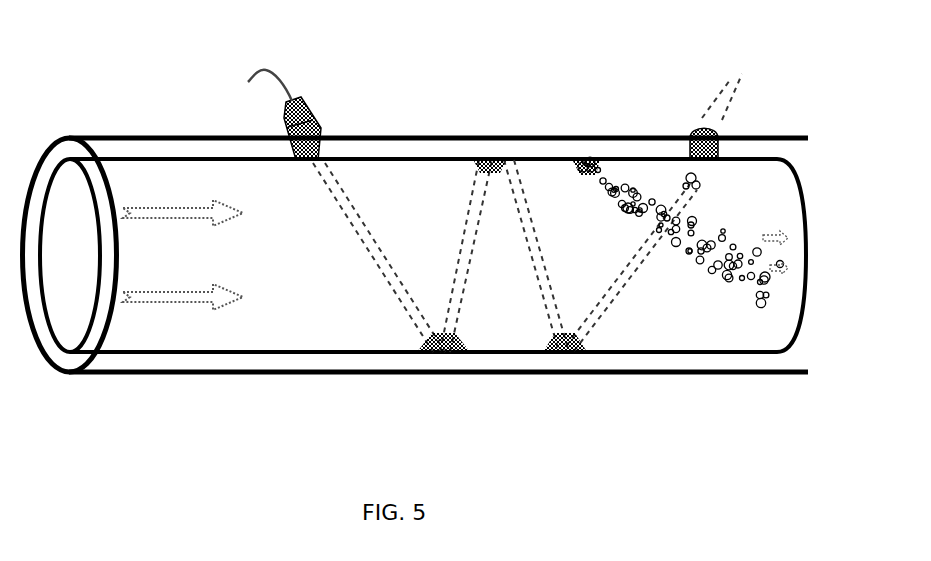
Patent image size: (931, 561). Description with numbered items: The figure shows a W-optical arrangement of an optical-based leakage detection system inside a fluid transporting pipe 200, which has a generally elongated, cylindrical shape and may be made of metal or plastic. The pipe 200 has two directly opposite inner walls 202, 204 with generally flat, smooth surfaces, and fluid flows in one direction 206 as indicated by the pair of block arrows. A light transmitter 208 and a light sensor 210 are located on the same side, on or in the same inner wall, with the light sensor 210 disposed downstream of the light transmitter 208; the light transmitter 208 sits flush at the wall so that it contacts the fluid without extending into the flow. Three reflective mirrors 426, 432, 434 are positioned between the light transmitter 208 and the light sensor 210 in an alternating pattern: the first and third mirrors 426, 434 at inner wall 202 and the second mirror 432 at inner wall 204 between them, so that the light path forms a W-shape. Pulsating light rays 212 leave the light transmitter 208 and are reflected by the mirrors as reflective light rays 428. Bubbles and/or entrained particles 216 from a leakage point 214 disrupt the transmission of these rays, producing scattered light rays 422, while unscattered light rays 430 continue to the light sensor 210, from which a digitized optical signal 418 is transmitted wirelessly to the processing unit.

The fluid transporting pipe 200 is at (147, 133).
The inner wall 202 is at (297, 349).
The inner wall 204 is at (271, 163).
The direction of fluid flow 206 is at (183, 255).
The light transmitter 208 is at (313, 108).
The light sensor 210 is at (694, 128).
The pulsating light rays 212 is at (368, 252).
The leakage point 214 is at (585, 150).
The bubbles and/or entrained particles 216 is at (571, 177).
The digitized optical signal 418 is at (724, 73).
The scattered light rays 422 is at (741, 241).
The first reflective mirror 426 is at (422, 355).
The reflective light rays 428 is at (455, 243).
The unscattered light rays 430 is at (682, 193).
The second reflective mirror 432 is at (498, 151).
The third reflective mirror 434 is at (563, 355).